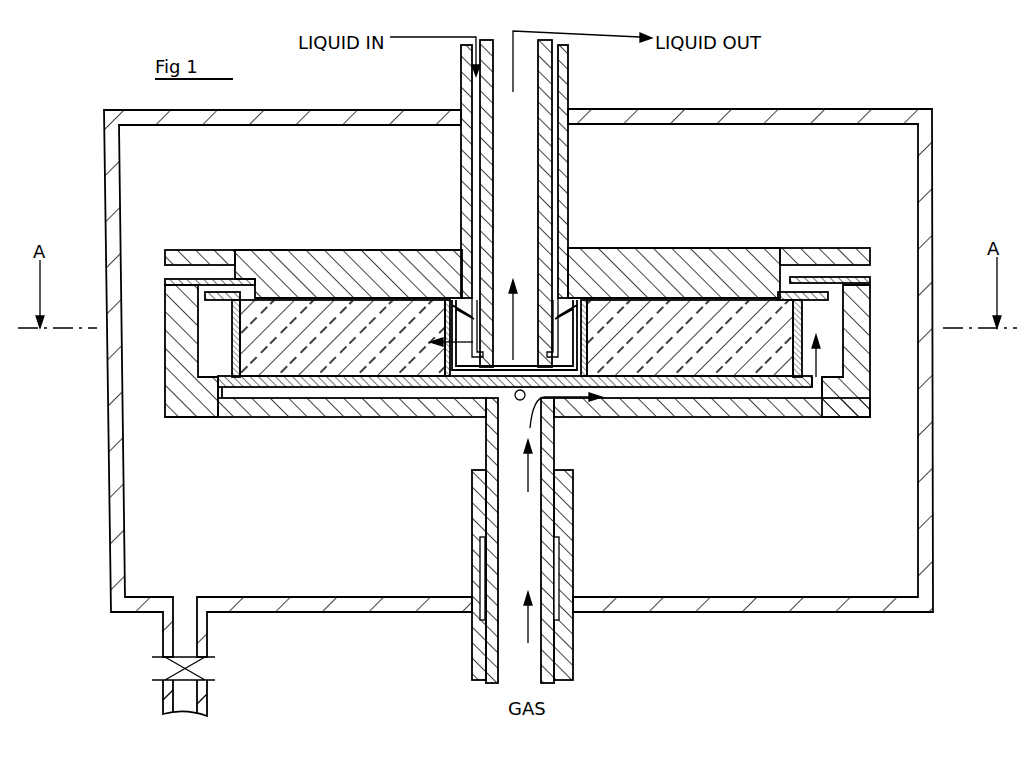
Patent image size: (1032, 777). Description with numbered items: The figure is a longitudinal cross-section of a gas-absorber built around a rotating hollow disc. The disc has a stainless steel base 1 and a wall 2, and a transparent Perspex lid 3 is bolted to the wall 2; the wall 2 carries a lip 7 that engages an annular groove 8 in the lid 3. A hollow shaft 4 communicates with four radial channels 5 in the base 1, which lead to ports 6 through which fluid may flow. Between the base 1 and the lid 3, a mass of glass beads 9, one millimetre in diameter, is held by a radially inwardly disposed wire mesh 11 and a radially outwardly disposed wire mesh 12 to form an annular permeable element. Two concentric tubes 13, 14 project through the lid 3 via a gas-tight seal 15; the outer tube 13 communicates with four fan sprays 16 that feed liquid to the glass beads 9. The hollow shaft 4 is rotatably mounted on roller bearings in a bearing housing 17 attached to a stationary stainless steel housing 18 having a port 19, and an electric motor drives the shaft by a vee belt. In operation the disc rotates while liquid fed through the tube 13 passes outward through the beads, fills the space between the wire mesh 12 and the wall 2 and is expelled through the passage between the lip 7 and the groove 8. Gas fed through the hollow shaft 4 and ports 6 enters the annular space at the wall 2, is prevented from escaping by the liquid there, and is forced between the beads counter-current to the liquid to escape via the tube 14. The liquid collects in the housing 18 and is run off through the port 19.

The base 1 is at (782, 410).
The wall 2 is at (862, 352).
The lid 3 is at (685, 255).
The hollow shaft 4 is at (555, 680).
The radial channels 5 is at (828, 425).
The ports 6 is at (825, 382).
The lip 7 is at (176, 288).
The annular groove 8 is at (228, 251).
The glass beads 9 is at (256, 368).
The radially inwardly disposed wire mesh 11 is at (446, 340).
The radially outwardly disposed wire mesh 12 is at (233, 343).
The outer tube 13 is at (569, 80).
The inner tube 14 is at (559, 46).
The gas-tight seal 15 is at (574, 262).
The fan sprays 16 is at (458, 330).
The bearing housing 17 is at (574, 613).
The stationary housing 18 is at (114, 560).
The port 19 is at (182, 636).